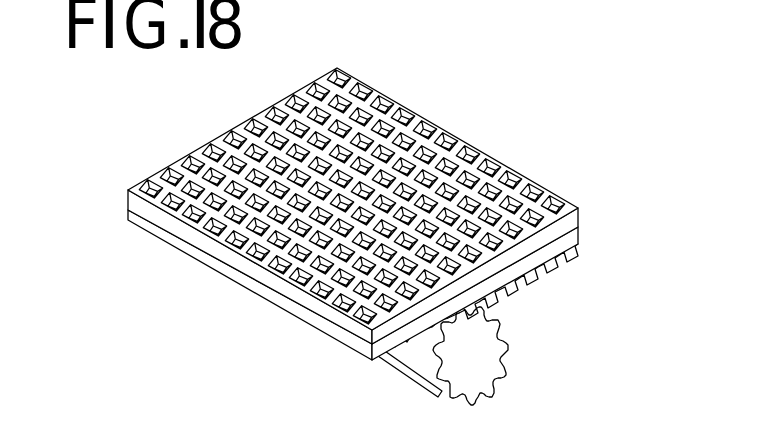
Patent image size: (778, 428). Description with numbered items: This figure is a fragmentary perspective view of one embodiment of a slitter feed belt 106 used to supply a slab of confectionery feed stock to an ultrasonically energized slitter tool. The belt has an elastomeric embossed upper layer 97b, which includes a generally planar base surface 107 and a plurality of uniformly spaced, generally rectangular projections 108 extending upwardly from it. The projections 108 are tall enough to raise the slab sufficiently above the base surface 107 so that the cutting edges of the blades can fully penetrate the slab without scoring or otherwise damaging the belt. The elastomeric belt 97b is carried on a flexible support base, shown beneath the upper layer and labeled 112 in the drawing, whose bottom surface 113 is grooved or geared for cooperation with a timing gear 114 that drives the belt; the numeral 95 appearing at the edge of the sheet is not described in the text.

The label 95 is at (653, 8).
The elastomeric embossed slitter infeed belt upper layer 97b is at (128, 191).
The slitter feed belt embodiment 106 is at (337, 221).
The base surface 107 is at (347, 80).
The rectangular projections 108 is at (410, 111).
The lower plate layer 112 is at (128, 220).
The grooved or geared bottom surface 113 is at (530, 273).
The timing gear 114 is at (458, 367).